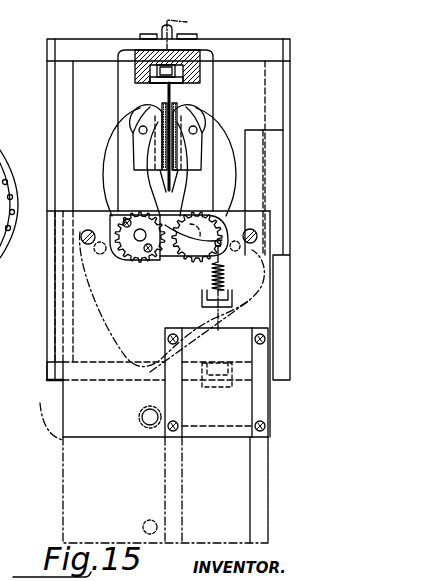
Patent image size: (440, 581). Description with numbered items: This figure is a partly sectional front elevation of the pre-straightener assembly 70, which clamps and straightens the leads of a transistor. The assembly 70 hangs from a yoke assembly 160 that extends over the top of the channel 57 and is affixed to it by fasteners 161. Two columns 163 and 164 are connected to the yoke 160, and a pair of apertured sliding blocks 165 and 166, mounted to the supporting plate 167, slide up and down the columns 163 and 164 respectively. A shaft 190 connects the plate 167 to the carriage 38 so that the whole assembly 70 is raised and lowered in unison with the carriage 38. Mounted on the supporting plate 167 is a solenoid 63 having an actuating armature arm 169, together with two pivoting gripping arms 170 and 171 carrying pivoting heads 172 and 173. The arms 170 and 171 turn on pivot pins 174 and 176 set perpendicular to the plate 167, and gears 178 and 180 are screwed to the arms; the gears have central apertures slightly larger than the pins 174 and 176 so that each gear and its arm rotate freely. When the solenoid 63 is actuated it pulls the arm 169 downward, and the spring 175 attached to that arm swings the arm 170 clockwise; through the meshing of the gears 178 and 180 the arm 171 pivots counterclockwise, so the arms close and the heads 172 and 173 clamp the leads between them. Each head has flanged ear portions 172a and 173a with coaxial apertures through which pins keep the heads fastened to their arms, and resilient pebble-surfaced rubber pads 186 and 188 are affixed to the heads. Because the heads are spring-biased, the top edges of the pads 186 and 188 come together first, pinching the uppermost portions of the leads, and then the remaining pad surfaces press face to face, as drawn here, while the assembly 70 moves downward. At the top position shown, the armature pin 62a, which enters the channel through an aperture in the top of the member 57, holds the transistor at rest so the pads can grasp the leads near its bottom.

The carriage 38 is at (9, 193).
The channel 57 is at (195, 60).
The armature pin 62a is at (188, 27).
The solenoid 63 is at (242, 405).
The pre-straightener assembly 70 is at (52, 326).
The yoke assembly 160 is at (48, 108).
The fasteners 161 is at (147, 35).
The column 163 is at (63, 87).
The column 164 is at (272, 82).
The sliding block 165 is at (60, 243).
The sliding block 166 is at (272, 152).
The supporting plate 167 is at (72, 393).
The actuating armature arm 169 is at (227, 312).
The gripping arm 170 is at (113, 160).
The gripping arm 171 is at (222, 173).
The pivoting head 172 is at (142, 115).
The flanged ear portions 172a is at (150, 147).
The pivoting head 173 is at (205, 112).
The flanged ear portions 173a is at (205, 137).
The pivot pin 174 is at (141, 229).
The spring 175 is at (223, 268).
The pivot pin 176 is at (201, 212).
The gear 178 is at (147, 262).
The gear 180 is at (198, 262).
The pad 186 is at (162, 113).
The pad 188 is at (173, 113).
The shaft 190 is at (148, 428).